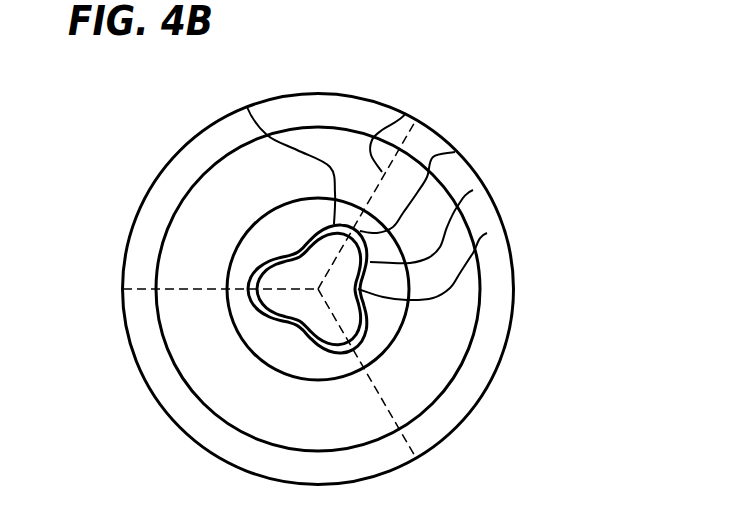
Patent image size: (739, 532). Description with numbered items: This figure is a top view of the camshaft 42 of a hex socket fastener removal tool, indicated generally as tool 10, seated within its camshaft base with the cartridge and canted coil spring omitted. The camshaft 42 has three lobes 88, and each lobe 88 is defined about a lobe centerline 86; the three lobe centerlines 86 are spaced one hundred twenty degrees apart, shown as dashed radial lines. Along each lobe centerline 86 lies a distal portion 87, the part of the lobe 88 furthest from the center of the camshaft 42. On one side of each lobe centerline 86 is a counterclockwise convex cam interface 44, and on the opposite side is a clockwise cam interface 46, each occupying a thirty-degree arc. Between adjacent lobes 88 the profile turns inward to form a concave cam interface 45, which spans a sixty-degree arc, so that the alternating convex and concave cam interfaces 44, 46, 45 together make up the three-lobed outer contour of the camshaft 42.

The fiber / cable assembly 10 is at (162, 128).
The camshaft 42 is at (317, 289).
The counterclockwise convex cam interface 44 is at (247, 107).
The concave cam interface 45 is at (487, 233).
The clockwise cam interface 46 is at (473, 190).
The lobe centerline 86 is at (406, 113).
The distal portion 87 is at (455, 152).
The lobe 88 is at (350, 305).